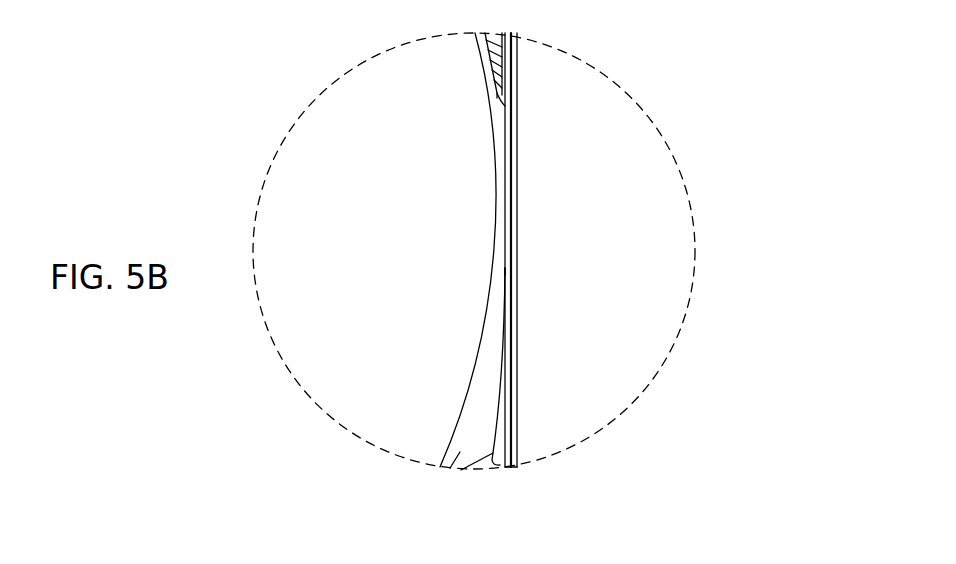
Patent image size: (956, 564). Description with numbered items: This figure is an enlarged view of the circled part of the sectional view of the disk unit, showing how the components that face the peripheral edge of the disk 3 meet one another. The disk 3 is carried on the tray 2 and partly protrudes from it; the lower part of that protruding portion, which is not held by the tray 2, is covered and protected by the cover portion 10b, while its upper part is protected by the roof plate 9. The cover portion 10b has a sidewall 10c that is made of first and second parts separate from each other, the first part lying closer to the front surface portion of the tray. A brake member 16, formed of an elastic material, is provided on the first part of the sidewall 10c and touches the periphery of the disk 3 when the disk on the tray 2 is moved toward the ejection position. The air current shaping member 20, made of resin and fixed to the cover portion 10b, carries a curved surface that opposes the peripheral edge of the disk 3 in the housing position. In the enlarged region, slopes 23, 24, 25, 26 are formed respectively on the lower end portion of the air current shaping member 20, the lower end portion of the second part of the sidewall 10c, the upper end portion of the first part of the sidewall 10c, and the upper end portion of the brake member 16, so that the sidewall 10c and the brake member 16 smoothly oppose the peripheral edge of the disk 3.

The tray 2 is at (284, 6).
The disk 3 is at (300, 163).
The roof plate 9 is at (517, 174).
The cover portion 10b is at (444, 468).
The sidewall 10c is at (507, 66).
The brake member 16 is at (461, 470).
The air current shaping member 20 is at (495, 42).
The slope 23 is at (497, 99).
The slope 24 is at (503, 106).
The slope 25 is at (507, 268).
The slope 26 is at (502, 425).